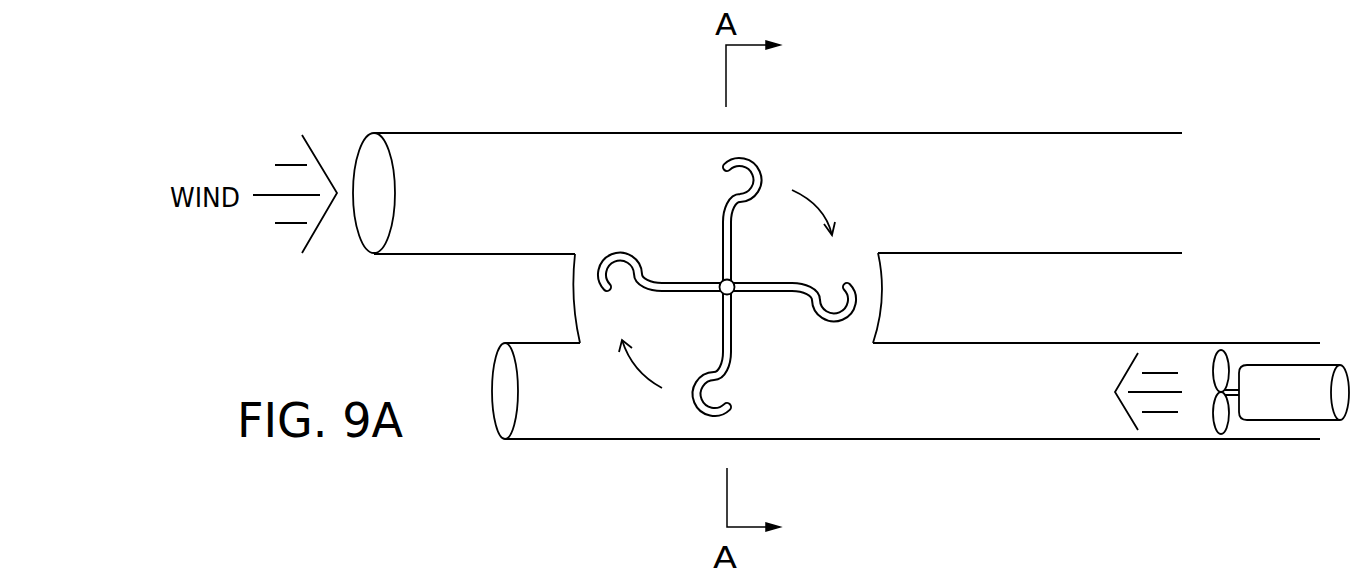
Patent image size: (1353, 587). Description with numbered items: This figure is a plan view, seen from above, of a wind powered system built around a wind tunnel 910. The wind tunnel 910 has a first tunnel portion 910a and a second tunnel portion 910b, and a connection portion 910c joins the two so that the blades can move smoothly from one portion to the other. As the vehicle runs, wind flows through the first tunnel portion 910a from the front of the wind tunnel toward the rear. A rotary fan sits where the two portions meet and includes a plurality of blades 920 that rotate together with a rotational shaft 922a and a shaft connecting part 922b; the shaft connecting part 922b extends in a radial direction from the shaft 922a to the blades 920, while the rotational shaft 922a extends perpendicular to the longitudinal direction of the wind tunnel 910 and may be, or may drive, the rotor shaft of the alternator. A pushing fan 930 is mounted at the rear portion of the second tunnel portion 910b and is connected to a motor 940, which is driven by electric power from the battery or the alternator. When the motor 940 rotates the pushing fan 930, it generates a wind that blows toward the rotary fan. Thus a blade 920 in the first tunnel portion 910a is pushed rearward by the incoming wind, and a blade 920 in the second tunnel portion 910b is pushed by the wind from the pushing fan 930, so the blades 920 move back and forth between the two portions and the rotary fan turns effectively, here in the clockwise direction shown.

The wind tunnel 910 is at (1005, 133).
The first tunnel portion 910a is at (537, 133).
The second tunnel portion 910b is at (553, 440).
The connection portion 910c is at (571, 299).
The blades 920 is at (721, 245).
The rotational shaft 922a is at (667, 250).
The shaft connecting part 922b is at (689, 221).
The pushing fan 930 is at (1228, 425).
The motor 940 is at (1295, 365).